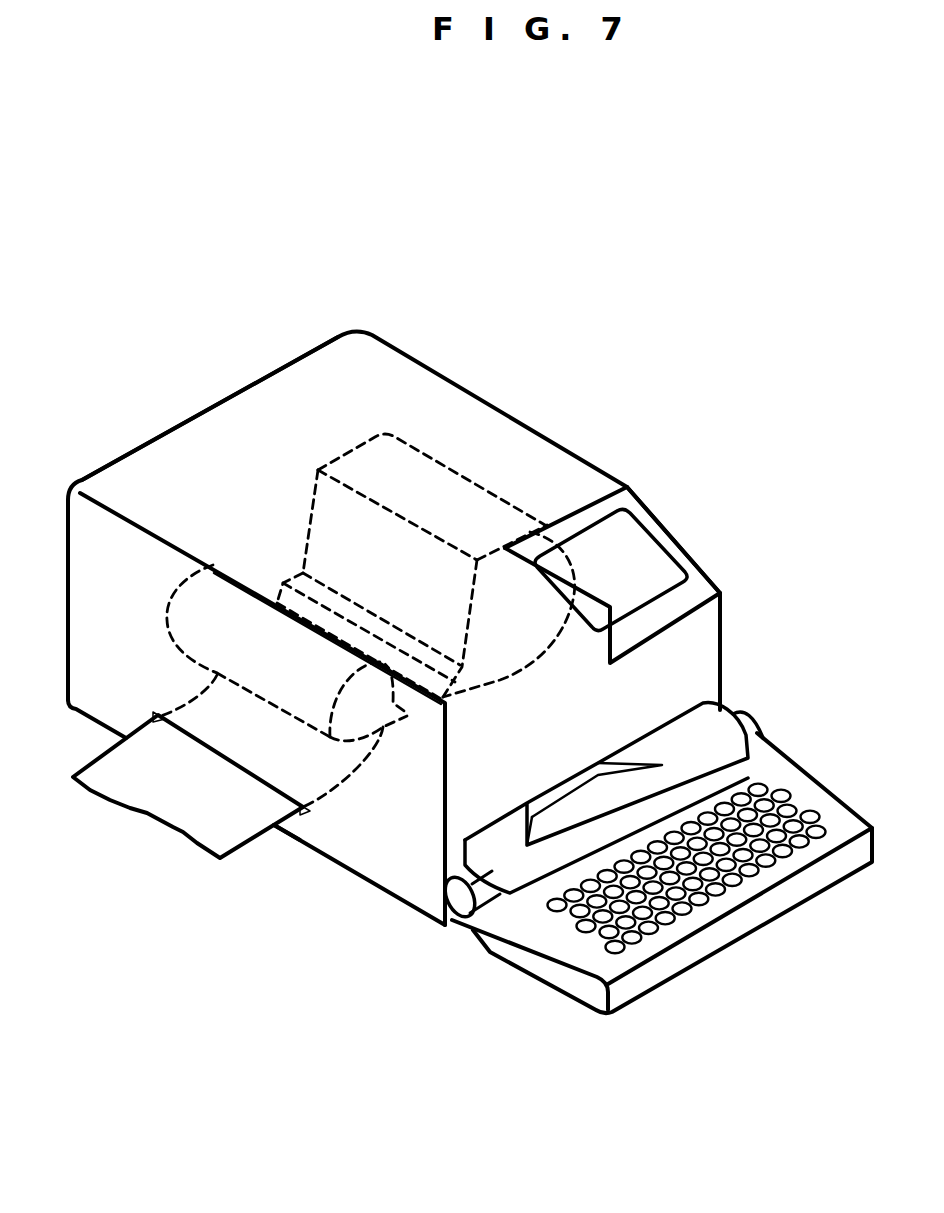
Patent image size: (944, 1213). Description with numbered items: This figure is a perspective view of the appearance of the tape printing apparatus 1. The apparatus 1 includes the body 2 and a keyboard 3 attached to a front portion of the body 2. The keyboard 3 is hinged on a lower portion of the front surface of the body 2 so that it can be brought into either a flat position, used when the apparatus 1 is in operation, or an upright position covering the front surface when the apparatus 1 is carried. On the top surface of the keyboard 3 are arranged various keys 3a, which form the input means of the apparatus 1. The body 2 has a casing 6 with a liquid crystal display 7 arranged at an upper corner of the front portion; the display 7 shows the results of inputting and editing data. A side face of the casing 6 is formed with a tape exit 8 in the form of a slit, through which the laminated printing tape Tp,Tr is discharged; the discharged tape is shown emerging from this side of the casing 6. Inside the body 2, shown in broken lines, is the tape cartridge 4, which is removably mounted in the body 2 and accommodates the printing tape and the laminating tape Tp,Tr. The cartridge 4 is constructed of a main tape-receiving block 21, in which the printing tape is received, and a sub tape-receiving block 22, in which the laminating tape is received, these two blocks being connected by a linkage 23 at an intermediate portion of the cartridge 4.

The tape printing apparatus 1 is at (571, 295).
The body 2 is at (430, 369).
The keyboard 3 is at (777, 777).
The keys 3a is at (735, 881).
The tape cartridge 4 is at (501, 497).
The casing 6 is at (200, 425).
The liquid crystal display 7 is at (637, 545).
The tape exit 8 is at (287, 828).
The main tape-receiving block 21 is at (318, 467).
The sub tape-receiving block 22 is at (176, 588).
The linkage 23 is at (296, 572).
The printing tape and laminating tape Tp,Tr is at (221, 858).